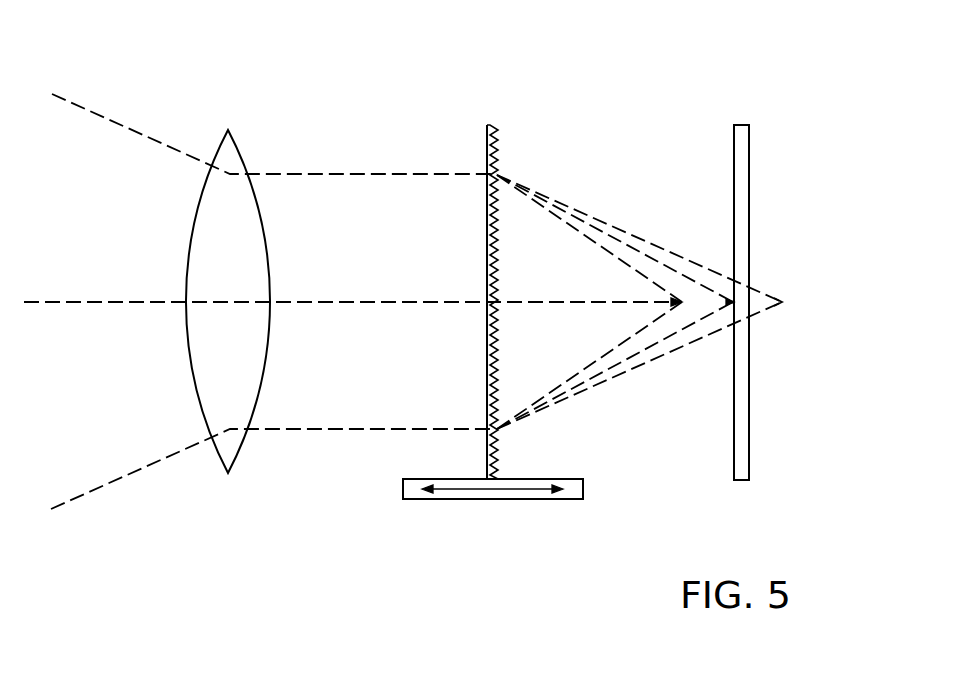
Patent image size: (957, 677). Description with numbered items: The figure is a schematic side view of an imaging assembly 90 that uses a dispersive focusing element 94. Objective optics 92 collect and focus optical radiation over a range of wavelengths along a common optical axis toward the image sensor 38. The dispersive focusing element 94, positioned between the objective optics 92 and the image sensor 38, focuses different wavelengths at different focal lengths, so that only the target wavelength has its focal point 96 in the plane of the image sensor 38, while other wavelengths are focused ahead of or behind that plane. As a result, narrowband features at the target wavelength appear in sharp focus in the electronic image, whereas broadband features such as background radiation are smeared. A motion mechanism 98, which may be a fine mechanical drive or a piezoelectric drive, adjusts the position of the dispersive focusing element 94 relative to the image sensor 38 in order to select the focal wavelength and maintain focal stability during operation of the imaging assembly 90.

The imaging assembly 90 is at (676, 59).
The objective optics 92 is at (234, 150).
The dispersive focusing element 94 is at (492, 125).
The image sensor 38 is at (750, 133).
The focal point 96 is at (730, 303).
The motion mechanism 98 is at (422, 500).